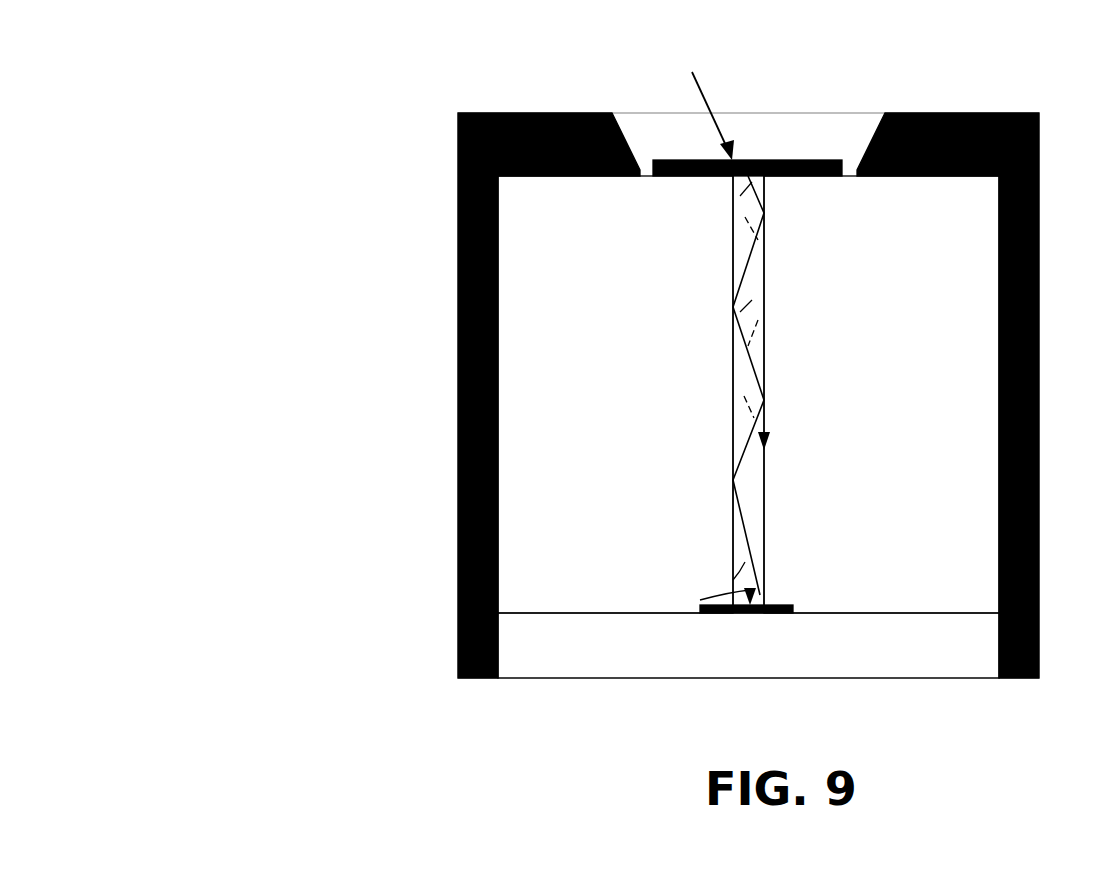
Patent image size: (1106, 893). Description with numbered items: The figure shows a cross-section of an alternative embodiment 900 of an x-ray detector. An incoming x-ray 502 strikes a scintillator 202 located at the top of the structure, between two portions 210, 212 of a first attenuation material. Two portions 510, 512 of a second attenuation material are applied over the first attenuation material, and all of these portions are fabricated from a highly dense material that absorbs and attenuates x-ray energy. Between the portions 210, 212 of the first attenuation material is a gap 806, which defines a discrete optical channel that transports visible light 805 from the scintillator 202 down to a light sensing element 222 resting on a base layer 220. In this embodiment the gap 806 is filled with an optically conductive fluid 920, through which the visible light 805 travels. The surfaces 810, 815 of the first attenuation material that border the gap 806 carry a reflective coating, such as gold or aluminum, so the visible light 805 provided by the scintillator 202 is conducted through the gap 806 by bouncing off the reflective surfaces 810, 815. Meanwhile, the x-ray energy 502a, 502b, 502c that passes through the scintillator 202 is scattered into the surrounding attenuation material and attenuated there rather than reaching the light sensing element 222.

The alternative embodiment 900 is at (296, 76).
The x-ray 502 is at (702, 107).
The scintillator 202 is at (768, 160).
The portion of first attenuation material 210 is at (626, 238).
The portion of first attenuation material 212 is at (904, 238).
The x-ray energy 502a is at (740, 202).
The x-ray energy 502b is at (740, 322).
The x-ray energy 502c is at (745, 395).
The portion of second attenuation material 510 is at (458, 302).
The portion of second attenuation material 512 is at (1040, 304).
The visible light 805 is at (733, 497).
The gap 806 is at (726, 538).
The optically conductive fluid 920 is at (748, 557).
The reflective surface 810 is at (750, 592).
The light sensing element 222 is at (745, 615).
The substrate 220 is at (558, 656).
The reflective surface 815 is at (700, 600).